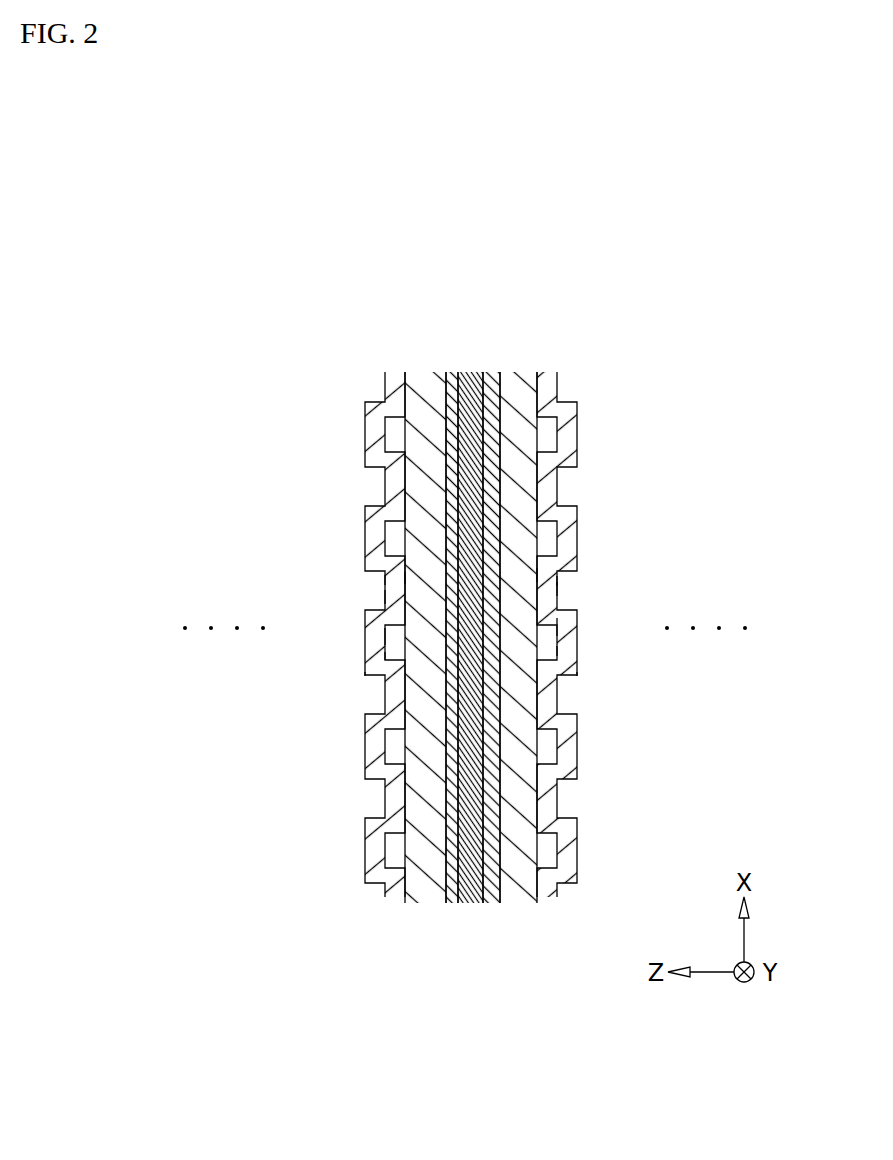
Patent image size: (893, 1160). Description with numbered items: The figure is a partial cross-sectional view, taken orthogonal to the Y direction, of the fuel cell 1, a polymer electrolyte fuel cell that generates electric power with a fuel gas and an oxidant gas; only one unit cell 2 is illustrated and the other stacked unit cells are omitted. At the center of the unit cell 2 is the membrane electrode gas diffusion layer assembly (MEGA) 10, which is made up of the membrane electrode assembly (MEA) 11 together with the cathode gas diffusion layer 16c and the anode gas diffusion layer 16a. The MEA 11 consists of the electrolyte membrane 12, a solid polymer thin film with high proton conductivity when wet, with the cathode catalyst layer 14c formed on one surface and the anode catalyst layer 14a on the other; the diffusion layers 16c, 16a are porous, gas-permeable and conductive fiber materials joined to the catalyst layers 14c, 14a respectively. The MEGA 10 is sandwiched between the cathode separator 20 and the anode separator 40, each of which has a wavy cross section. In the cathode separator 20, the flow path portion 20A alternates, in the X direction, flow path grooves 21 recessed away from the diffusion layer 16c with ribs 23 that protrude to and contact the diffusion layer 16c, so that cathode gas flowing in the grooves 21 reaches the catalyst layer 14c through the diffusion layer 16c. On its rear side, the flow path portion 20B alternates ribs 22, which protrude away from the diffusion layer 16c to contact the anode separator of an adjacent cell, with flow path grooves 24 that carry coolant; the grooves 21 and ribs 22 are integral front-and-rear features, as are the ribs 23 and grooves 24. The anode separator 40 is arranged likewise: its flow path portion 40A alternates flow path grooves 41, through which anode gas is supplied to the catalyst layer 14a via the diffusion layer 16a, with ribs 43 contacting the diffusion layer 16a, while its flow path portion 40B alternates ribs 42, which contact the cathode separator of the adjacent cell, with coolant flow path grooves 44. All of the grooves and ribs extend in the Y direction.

The fuel cell 1 is at (648, 183).
The unit cell 2 is at (622, 293).
The membrane electrode gas diffusion layer assembly 10 is at (405, 200).
The membrane electrode assembly 11 is at (437, 244).
The electrolyte membrane 12 is at (473, 378).
The cathode catalyst layer 14c is at (454, 382).
The anode catalyst layer 14a is at (493, 382).
The cathode gas diffusion layer 16c is at (425, 375).
The anode gas diffusion layer 16a is at (518, 378).
The cathode separator 20 is at (383, 384).
The flow path portion 20A is at (365, 680).
The flow path portion 20B is at (383, 596).
The flow path groove 21 is at (386, 636).
The rib 22 is at (395, 657).
The rib 23 is at (412, 582).
The flow path groove 24 is at (398, 576).
The anode separator 40 is at (559, 384).
The flow path portion 40A is at (578, 679).
The flow path portion 40B is at (559, 588).
The flow path groove 41 is at (558, 627).
The rib 42 is at (545, 651).
The rib 43 is at (534, 578).
The flow path groove 44 is at (556, 582).